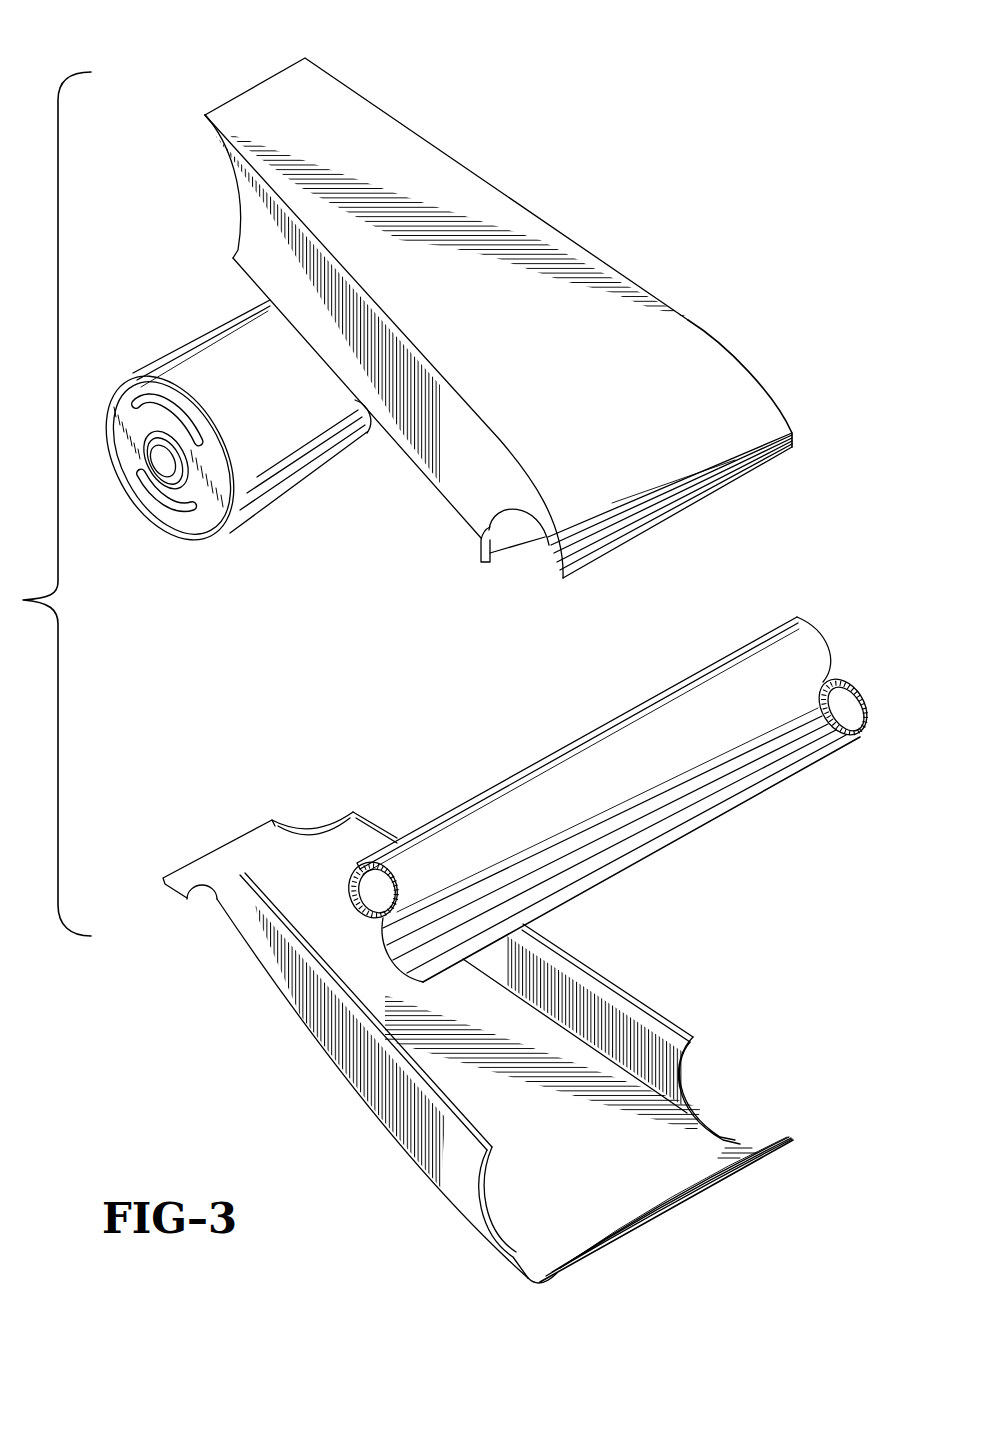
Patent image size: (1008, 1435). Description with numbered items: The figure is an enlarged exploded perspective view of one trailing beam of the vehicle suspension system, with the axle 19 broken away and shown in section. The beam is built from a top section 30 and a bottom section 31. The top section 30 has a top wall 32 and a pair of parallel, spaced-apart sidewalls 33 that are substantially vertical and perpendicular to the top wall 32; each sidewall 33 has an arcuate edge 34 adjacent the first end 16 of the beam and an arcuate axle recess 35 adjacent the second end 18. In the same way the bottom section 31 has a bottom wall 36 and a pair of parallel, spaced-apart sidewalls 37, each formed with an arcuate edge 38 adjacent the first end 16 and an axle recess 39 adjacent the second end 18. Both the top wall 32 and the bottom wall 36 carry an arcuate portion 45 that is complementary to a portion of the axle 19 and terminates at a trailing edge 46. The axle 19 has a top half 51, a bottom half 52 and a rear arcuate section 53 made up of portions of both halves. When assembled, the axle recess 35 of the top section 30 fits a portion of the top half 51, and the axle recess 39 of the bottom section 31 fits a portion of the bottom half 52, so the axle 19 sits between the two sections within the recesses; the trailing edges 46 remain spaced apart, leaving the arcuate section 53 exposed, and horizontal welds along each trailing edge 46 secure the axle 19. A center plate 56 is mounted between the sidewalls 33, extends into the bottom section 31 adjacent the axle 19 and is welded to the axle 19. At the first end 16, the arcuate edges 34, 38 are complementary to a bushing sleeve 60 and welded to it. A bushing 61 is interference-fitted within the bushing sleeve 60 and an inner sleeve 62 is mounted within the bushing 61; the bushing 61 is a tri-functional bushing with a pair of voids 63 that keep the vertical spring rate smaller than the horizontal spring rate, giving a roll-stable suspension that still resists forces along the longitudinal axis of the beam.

The first end 16 is at (510, 649).
The second end 18 is at (791, 428).
The axle 19 is at (610, 772).
The top section 30 is at (688, 322).
The bottom section 31 is at (648, 999).
The top wall 32 is at (440, 181).
The sidewalls 33 is at (468, 494).
The arcuate edge 34 is at (243, 212).
The arcuate axle recess 35 is at (548, 548).
The bottom wall 36 is at (562, 1228).
The sidewalls 37 is at (300, 1008).
The arcuate edge 38 is at (188, 898).
The axle recess 39 is at (685, 1080).
The arcuate portion 45 is at (758, 400).
The trailing edge 46 is at (643, 527).
The top half 51 is at (800, 632).
The bottom half 52 is at (821, 760).
The rear arcuate section 53 is at (593, 852).
The center plate 56 is at (497, 553).
The bushing sleeve 60 is at (225, 437).
The bushing 61 is at (207, 518).
The inner sleeve 62 is at (177, 483).
The voids 63 is at (147, 412).